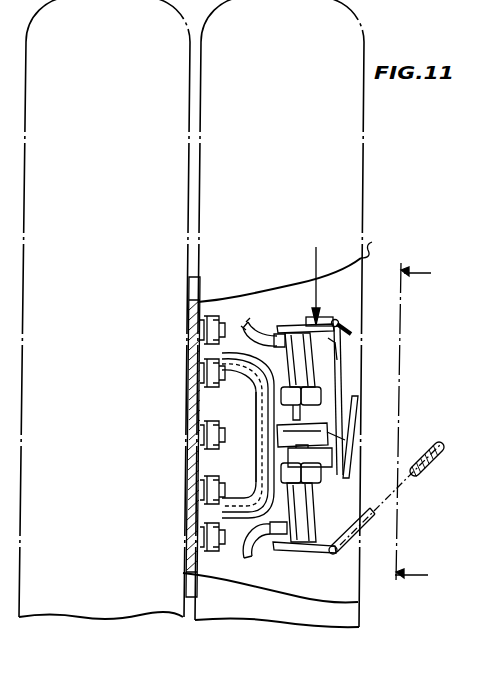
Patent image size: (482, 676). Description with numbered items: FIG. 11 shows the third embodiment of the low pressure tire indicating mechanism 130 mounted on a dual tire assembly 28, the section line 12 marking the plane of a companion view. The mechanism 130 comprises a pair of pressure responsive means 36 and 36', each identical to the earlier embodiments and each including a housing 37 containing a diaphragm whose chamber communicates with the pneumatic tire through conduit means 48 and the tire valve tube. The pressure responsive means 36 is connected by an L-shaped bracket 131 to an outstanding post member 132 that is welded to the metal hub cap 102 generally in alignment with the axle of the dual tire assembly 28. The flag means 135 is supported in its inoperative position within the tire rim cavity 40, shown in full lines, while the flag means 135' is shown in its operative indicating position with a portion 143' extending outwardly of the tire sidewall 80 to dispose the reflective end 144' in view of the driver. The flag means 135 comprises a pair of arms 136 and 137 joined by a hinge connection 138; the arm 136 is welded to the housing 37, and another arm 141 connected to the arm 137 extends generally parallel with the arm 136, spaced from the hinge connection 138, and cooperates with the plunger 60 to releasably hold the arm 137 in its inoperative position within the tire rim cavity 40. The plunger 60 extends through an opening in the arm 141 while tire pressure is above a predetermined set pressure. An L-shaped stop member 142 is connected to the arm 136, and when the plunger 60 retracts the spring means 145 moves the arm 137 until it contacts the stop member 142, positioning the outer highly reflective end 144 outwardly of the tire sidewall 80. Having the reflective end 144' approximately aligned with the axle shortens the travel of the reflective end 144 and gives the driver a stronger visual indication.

The section line 12 is at (413, 427).
The dual tire assembly 28 is at (366, 40).
The pressure responsive means 36 is at (248, 435).
The pressure responsive means 36' is at (249, 516).
The housing 37 is at (268, 383).
The tire rim cavity 40 is at (340, 580).
The conduit means 48 is at (259, 322).
The plunger 60 is at (286, 420).
The tire sidewall 80 is at (376, 244).
The metal hub cap 102 is at (232, 358).
The low pressure tire indicating mechanism 130 is at (315, 275).
The L-shaped bracket 131 is at (282, 430).
The outstanding post member 132 is at (322, 432).
The flag means 135 is at (367, 354).
The flag means 135' is at (391, 494).
The arm 136 is at (291, 325).
The arm 137 is at (338, 370).
The hinge connection 138 is at (338, 318).
The arm 141 is at (334, 390).
The L-shaped stop member 142 is at (340, 322).
The portion 143' is at (366, 530).
The outer highly reflective end 144 is at (372, 437).
The reflective end 144' is at (439, 444).
The spring means 145 is at (328, 340).